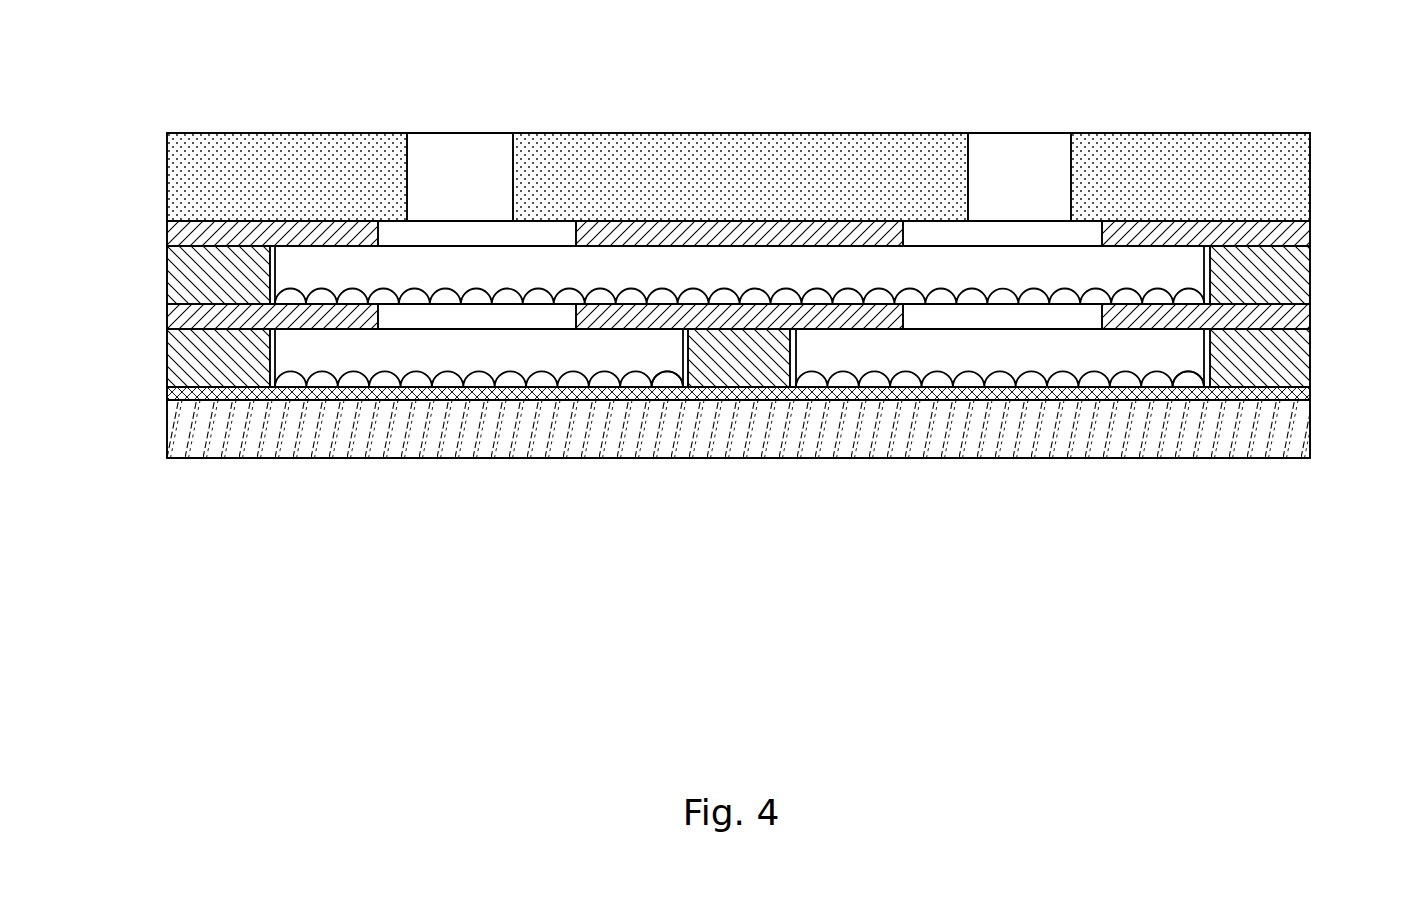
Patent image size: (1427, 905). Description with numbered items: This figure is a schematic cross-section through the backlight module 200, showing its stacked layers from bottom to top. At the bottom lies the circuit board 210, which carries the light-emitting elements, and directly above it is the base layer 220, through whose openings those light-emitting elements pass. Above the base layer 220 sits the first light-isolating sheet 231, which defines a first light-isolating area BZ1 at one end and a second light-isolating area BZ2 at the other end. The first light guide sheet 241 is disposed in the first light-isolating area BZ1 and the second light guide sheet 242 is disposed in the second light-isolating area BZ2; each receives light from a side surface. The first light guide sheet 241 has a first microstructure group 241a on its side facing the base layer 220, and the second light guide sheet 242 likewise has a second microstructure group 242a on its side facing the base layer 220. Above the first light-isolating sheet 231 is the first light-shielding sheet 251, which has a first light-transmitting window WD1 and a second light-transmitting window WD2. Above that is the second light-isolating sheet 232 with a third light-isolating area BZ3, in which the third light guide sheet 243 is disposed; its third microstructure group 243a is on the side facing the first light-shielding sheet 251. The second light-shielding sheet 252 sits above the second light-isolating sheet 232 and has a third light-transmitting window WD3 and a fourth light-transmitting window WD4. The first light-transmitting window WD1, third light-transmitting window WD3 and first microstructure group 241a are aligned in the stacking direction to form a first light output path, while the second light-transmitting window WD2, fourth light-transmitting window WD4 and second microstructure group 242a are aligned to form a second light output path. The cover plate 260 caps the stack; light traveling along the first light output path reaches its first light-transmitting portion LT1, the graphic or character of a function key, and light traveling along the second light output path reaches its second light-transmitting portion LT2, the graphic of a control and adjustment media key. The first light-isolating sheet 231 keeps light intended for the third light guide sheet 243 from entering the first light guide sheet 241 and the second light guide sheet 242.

The backlight module 200 is at (53, 59).
The circuit board 210 is at (415, 441).
The base layer 220 is at (906, 394).
The first light-isolating sheet 231 is at (739, 421).
The second light-isolating sheet 232 is at (738, 186).
The first light guide sheet 241 is at (1093, 356).
The first microstructure group 241a is at (1166, 384).
The second light guide sheet 242 is at (565, 358).
The second microstructure group 242a is at (656, 384).
The third light guide sheet 243 is at (1123, 262).
The third microstructure group 243a is at (1163, 295).
The first light-shielding sheet 251 is at (1296, 315).
The second light-shielding sheet 252 is at (1296, 230).
The cover plate 260 is at (290, 150).
The first light-isolating area BZ1 is at (1208, 381).
The second light-isolating area BZ2 is at (270, 350).
The third light-isolating area BZ3 is at (270, 269).
The first light-transmitting window WD1 is at (1025, 318).
The second light-transmitting window WD2 is at (497, 318).
The third light-transmitting window WD3 is at (1002, 232).
The fourth light-transmitting window WD4 is at (444, 232).
The first light-transmitting portion LT1 is at (1046, 150).
The second light-transmitting portion LT2 is at (488, 150).